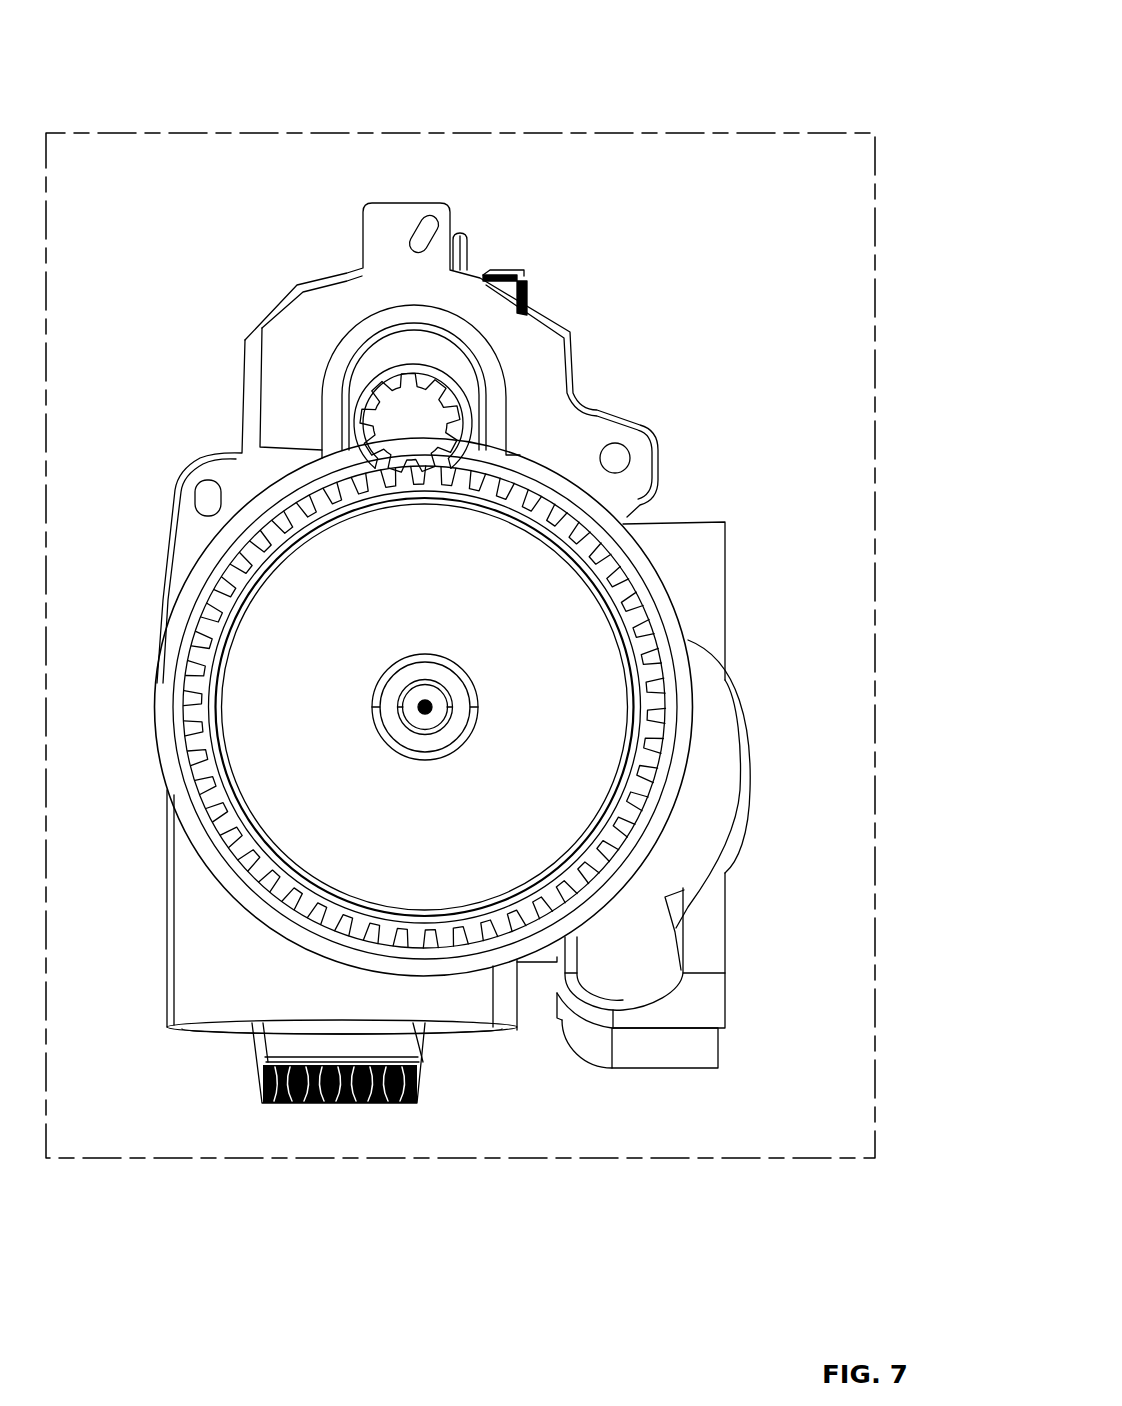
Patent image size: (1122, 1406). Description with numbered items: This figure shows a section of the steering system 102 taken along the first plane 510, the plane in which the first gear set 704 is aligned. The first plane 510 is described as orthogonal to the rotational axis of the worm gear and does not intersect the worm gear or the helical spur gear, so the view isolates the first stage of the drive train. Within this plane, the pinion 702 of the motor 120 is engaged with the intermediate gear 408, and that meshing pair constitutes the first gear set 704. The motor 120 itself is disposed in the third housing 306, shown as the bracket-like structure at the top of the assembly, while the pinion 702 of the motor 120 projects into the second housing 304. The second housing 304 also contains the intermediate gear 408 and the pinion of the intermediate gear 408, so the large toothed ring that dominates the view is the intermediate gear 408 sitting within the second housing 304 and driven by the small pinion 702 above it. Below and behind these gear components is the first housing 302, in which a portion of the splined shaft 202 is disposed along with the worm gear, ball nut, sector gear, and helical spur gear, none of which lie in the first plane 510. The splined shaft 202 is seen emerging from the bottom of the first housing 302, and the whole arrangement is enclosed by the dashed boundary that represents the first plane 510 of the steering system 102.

The steering system 102 is at (700, 44).
The first plane 510 is at (767, 133).
The motor 120 is at (520, 333).
The third housing 306 is at (487, 278).
The second housing 304 is at (318, 434).
The first gear set 704 is at (410, 345).
The pinion 702 is at (462, 402).
The intermediate gear 408 is at (610, 560).
The first housing 302 is at (167, 897).
The splined shaft 202 is at (418, 1085).